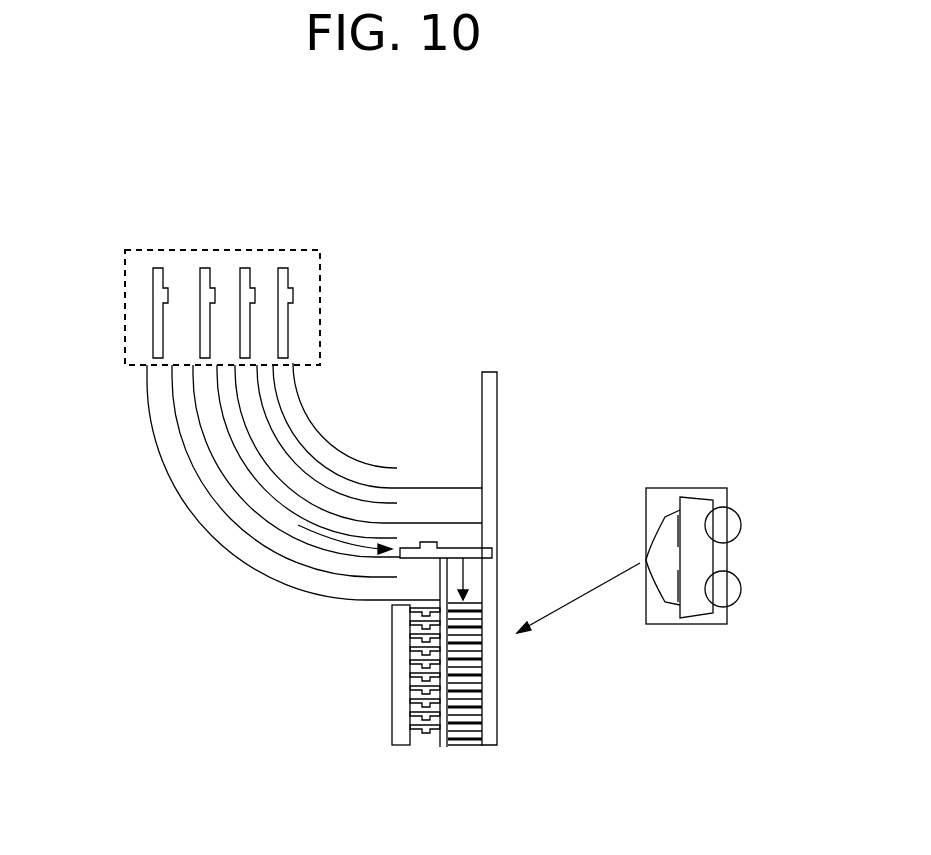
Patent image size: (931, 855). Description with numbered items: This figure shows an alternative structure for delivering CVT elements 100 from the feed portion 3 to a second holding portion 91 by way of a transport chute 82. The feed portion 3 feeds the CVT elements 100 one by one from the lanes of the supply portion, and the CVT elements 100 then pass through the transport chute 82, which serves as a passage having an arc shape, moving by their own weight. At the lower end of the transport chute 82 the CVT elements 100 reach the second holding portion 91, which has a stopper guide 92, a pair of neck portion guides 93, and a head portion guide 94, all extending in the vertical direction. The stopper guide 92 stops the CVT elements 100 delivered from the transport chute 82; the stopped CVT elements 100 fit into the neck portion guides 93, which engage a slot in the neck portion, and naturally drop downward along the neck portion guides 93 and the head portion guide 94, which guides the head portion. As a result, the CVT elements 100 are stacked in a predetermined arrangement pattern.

The feed portion 3 is at (322, 305).
The transport chute 82 is at (325, 437).
The second holding portion 91 is at (497, 682).
The stopper guide 92 is at (497, 390).
The neck portion guides 93 is at (446, 750).
The head portion guide 94 is at (392, 695).
The CVT element 100 is at (150, 288).